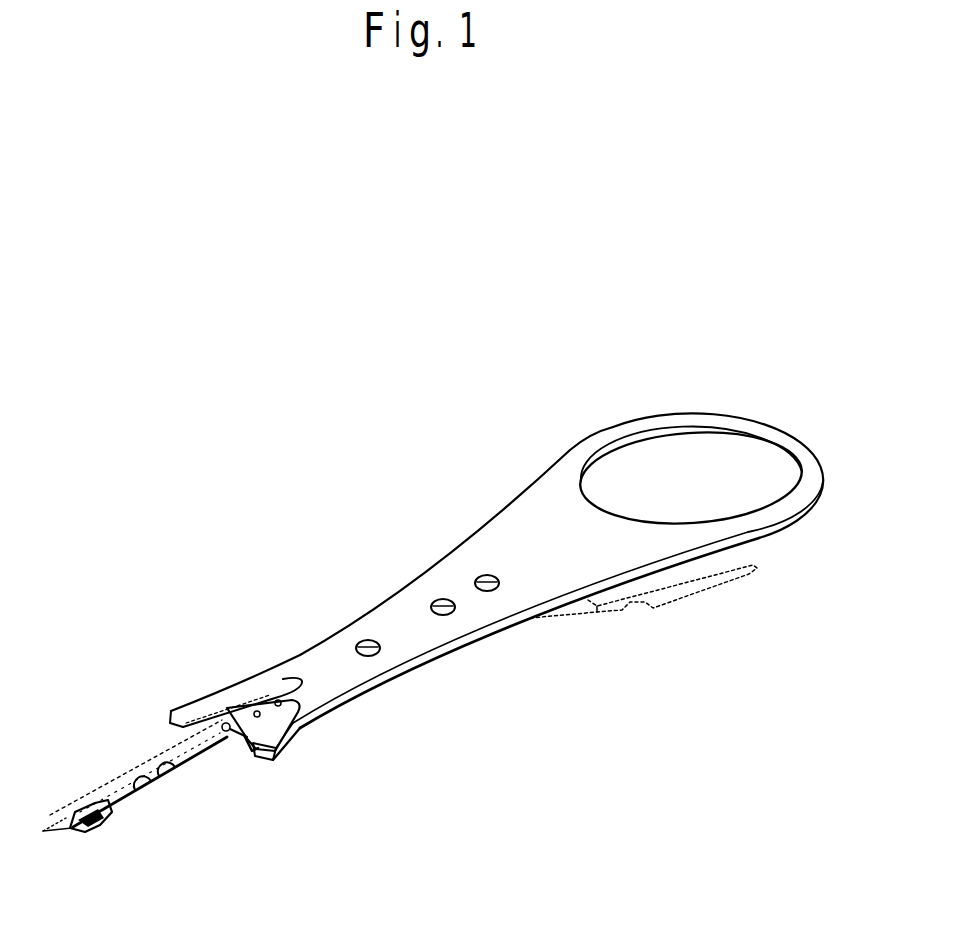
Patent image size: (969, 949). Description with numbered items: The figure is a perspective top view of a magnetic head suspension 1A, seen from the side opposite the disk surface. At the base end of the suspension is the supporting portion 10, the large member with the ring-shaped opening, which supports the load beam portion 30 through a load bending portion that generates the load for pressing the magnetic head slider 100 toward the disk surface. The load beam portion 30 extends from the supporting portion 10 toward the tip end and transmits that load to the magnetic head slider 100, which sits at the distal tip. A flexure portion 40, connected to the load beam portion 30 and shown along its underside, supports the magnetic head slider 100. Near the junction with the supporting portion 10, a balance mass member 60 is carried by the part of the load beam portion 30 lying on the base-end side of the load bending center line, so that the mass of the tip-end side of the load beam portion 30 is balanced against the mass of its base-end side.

The magnetic head suspension 1A is at (628, 800).
The supporting portion 10 is at (425, 544).
The load beam portion 30 is at (131, 744).
The flexure portion 40 is at (600, 640).
The balance mass member 60 is at (256, 691).
The magnetic head slider 100 is at (109, 845).